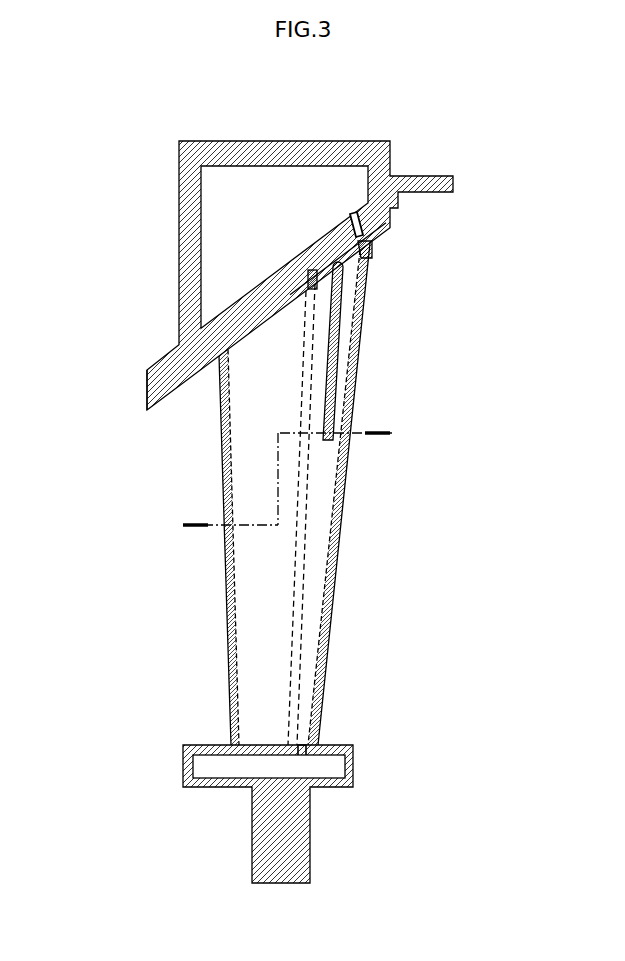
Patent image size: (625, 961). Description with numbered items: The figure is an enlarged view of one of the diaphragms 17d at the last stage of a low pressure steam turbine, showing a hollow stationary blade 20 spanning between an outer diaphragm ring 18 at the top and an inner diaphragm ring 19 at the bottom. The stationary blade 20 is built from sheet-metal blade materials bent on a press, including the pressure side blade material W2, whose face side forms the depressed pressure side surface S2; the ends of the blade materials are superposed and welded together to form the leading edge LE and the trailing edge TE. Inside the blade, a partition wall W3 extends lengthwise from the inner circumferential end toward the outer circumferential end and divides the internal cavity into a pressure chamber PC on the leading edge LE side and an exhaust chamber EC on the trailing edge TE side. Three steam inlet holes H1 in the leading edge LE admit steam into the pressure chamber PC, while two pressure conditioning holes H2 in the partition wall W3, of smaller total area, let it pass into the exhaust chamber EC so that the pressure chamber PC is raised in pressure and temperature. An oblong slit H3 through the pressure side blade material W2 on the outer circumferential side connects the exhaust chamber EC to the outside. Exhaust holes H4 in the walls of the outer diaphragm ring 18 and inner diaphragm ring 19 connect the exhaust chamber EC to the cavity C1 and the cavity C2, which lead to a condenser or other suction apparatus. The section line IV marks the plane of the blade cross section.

The outer diaphragm ring 18 is at (301, 139).
The diaphragm 17d is at (121, 343).
The inner diaphragm ring 19 is at (279, 885).
The stationary blade 20 is at (283, 494).
The cavity C1 is at (270, 224).
The cavity C2 is at (283, 775).
The steam inlet hole H1 is at (224, 362).
The pressure conditioning hole H2 is at (312, 270).
The slit H3 is at (338, 355).
The exhaust hole H4 is at (364, 248).
The pressure side blade material W2 is at (247, 631).
The partition wall W3 is at (303, 403).
The pressure side surface S2 is at (277, 677).
The pressure chamber PC is at (256, 443).
The leading edge LE is at (221, 471).
The trailing edge TE is at (346, 498).
The exhaust chamber EC is at (323, 553).
The section line IV- IV is at (377, 431).